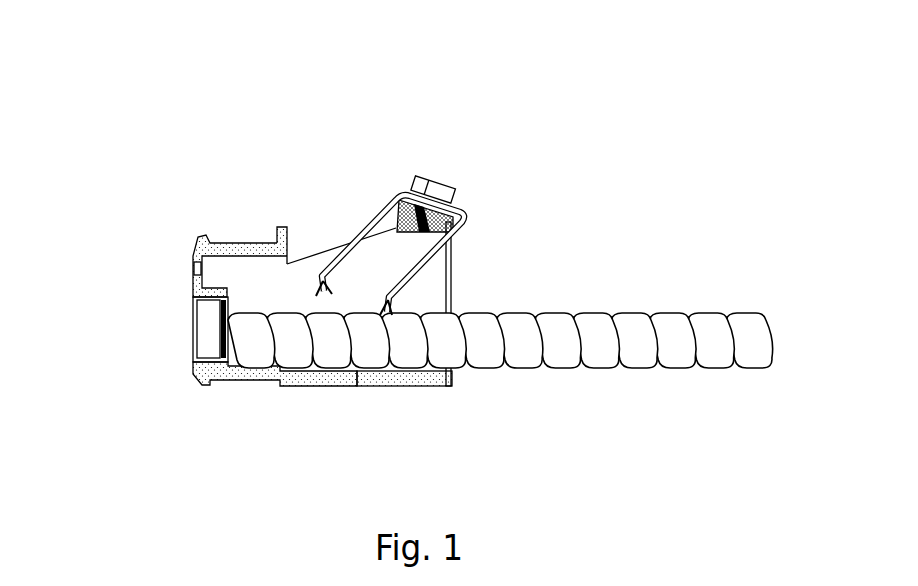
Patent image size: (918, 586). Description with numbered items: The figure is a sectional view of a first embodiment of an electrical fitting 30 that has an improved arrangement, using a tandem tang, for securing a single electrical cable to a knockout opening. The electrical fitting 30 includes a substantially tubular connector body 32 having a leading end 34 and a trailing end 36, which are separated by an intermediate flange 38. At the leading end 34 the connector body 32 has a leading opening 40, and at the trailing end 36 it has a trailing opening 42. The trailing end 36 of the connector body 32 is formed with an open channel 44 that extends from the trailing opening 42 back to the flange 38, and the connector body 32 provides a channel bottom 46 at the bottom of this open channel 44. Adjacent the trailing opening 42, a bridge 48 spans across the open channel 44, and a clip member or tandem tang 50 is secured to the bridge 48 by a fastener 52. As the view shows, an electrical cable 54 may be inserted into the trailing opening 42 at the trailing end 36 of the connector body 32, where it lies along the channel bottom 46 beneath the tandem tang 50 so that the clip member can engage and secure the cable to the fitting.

The electrical fitting 30 is at (198, 158).
The connector body 32 is at (296, 385).
The leading end 34 is at (192, 305).
The trailing end 36 is at (452, 275).
The intermediate flange 38 is at (283, 227).
The leading opening 40 is at (207, 335).
The trailing opening 42 is at (438, 300).
The open channel 44 is at (316, 263).
The channel bottom 46 is at (358, 387).
The bridge 48 is at (400, 212).
The tandem tang 50 is at (456, 210).
The fastener 52 is at (436, 182).
The electrical cable 54 is at (648, 370).